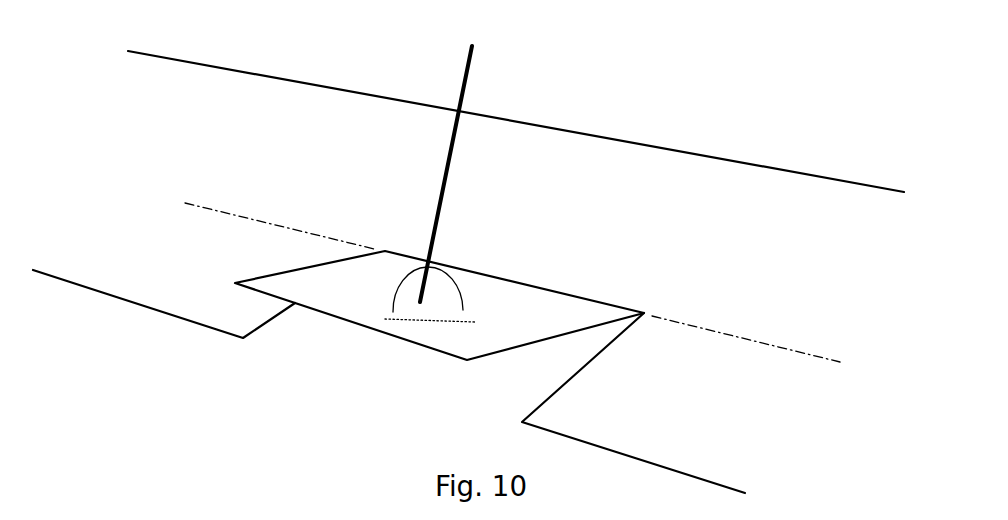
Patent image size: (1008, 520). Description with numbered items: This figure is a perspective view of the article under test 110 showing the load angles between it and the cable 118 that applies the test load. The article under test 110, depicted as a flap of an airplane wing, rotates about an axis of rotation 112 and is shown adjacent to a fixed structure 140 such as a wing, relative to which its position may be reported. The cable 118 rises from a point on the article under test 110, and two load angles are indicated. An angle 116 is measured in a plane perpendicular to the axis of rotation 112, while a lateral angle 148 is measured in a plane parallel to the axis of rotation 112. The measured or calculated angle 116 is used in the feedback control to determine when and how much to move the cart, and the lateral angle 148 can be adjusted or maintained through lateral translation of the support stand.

The article under test 110 is at (310, 285).
The axis of rotation 112 is at (720, 335).
The angle 116 is at (390, 290).
The cable 118 is at (461, 85).
The fixed structure 140 is at (709, 202).
The lateral angle 148 is at (465, 297).